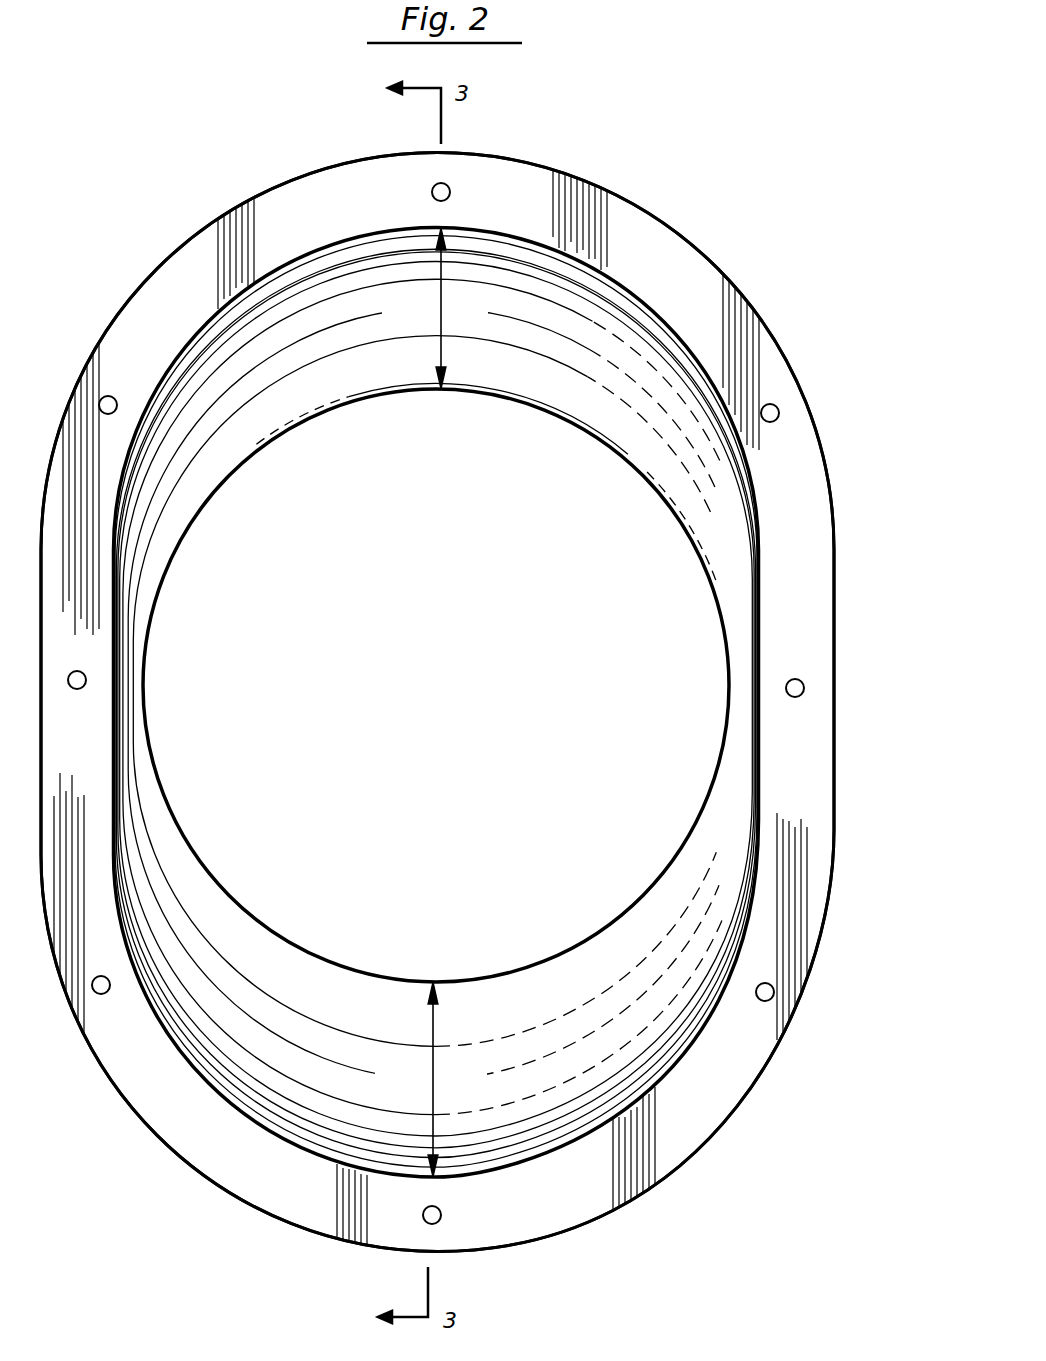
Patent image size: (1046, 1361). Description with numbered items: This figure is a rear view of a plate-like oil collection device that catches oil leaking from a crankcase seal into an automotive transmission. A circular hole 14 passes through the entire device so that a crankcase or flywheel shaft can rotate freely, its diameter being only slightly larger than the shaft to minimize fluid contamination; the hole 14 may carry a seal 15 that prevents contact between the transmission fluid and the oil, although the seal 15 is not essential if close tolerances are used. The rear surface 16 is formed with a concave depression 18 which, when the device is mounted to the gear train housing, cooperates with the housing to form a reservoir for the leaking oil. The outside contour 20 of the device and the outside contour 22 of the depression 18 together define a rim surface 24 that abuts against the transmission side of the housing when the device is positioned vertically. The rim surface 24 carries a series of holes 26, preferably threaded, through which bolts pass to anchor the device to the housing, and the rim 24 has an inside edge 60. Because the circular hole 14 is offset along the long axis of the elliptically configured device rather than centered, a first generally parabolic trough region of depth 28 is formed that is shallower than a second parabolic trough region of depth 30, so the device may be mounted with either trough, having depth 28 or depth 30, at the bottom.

The circular hole 14 is at (263, 923).
The seal 15 is at (575, 432).
The rear surface 16 is at (571, 1199).
The concave depression 18 is at (290, 336).
The outside contour 20 is at (633, 203).
The outside contour of depression 22 is at (612, 286).
The rim surface 24 is at (803, 553).
The holes 26 is at (451, 192).
The depth of first trough region 28 is at (429, 1075).
The depth of second trough region 30 is at (436, 306).
The inside edge of rim 60 is at (367, 1163).